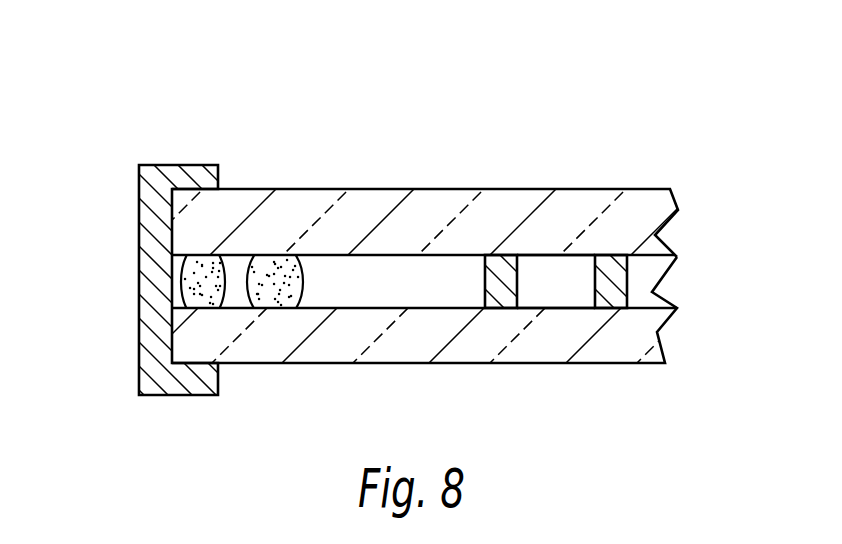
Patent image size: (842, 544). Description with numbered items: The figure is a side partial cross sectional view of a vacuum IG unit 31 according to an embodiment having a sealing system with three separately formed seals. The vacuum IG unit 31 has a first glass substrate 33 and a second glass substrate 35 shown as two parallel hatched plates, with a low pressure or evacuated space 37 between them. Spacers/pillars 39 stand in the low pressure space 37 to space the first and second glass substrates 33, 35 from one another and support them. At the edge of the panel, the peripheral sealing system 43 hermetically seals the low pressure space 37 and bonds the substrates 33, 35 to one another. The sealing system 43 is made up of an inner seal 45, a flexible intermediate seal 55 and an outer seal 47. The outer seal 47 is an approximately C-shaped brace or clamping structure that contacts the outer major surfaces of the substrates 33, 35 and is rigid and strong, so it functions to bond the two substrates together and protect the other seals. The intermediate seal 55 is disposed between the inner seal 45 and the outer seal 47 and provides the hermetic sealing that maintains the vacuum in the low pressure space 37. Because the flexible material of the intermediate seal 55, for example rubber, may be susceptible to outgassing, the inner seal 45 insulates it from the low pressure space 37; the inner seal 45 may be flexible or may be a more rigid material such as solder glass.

The vacuum IG unit 31 is at (392, 253).
The first glass substrate 33 is at (623, 347).
The second glass substrate 35 is at (585, 207).
The low pressure space 37 is at (557, 288).
The spacers/pillars 39 is at (518, 278).
The sealing system 43 is at (132, 292).
The inner seal 45 is at (303, 283).
The outer seal 47 is at (155, 253).
The intermediate seal 55 is at (217, 283).